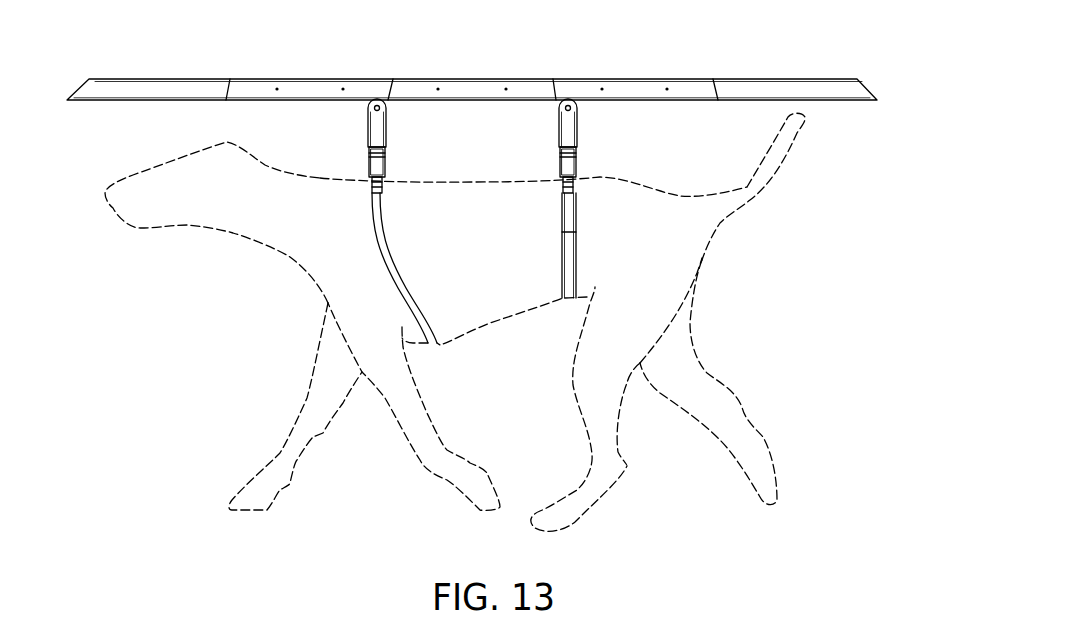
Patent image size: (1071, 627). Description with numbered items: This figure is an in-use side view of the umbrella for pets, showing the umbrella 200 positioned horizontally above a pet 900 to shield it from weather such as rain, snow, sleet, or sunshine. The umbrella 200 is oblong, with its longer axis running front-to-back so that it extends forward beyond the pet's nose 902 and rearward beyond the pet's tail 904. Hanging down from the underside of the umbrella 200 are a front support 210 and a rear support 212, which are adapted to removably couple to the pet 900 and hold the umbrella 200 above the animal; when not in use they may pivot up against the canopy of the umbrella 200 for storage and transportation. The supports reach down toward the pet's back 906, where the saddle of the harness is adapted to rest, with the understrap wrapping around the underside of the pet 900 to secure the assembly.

The umbrella 200 is at (785, 79).
The front support 210 is at (368, 130).
The rear support 212 is at (580, 110).
The pet 900 is at (335, 288).
The pet's nose 902 is at (110, 207).
The pet's tail 904 is at (800, 130).
The pet's back 906 is at (472, 182).